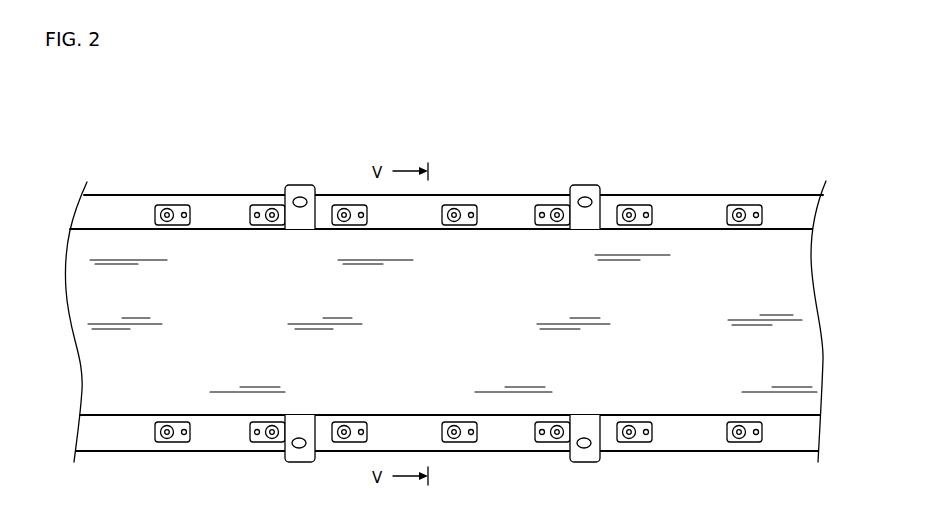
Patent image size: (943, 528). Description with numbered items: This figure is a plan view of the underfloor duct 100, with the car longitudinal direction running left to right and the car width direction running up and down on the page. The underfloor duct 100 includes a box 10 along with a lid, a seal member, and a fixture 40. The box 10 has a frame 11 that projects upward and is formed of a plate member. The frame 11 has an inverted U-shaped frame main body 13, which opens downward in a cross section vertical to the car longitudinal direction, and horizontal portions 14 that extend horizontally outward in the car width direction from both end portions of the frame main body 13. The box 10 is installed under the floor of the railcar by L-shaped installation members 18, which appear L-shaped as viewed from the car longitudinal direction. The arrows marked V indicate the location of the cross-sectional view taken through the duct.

The underfloor duct 100 is at (692, 163).
The box 10 is at (509, 457).
The frame 11 is at (486, 453).
The frame main body 13 is at (497, 245).
The horizontal portions 14 is at (525, 210).
The L-shaped installation members 18 is at (585, 195).
The fixture 40 is at (462, 205).